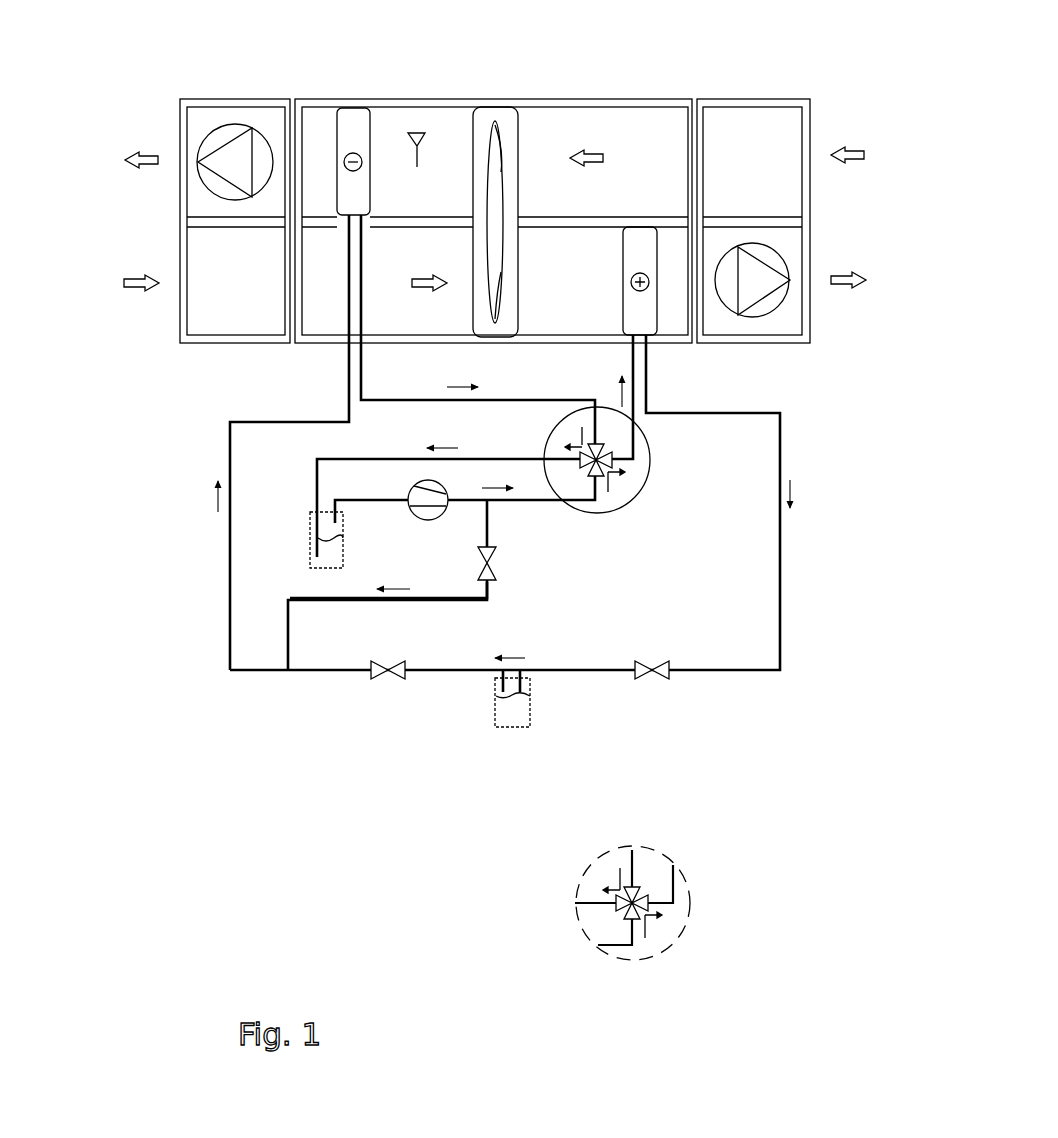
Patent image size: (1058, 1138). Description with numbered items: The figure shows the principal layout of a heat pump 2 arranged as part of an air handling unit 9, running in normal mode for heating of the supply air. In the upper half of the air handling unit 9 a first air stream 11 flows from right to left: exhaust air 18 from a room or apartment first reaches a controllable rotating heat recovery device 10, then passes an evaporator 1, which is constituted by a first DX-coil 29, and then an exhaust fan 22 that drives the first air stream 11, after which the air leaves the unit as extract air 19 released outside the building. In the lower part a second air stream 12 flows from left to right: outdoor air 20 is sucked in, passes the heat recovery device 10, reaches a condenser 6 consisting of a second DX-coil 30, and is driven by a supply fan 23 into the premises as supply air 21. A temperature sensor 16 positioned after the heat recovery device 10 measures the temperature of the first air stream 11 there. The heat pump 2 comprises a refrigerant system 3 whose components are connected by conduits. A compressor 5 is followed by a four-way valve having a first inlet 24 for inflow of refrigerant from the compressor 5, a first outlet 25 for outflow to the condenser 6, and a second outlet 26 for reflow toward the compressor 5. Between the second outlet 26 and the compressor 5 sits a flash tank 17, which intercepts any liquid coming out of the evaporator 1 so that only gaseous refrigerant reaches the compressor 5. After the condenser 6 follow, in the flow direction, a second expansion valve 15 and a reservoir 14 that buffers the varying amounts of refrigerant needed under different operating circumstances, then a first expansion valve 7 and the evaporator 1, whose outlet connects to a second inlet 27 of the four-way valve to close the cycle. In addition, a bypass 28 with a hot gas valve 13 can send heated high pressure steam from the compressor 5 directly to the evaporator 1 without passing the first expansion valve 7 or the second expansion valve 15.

The evaporator 1 is at (382, 125).
The heat pump 2 is at (212, 682).
The refrigerant system 3 is at (227, 440).
The compressor 5 is at (452, 507).
The condenser 6 is at (680, 305).
The first expansion valve 7 is at (368, 678).
The air handling unit 9 is at (818, 92).
The heat recovery device 10 is at (502, 115).
The first air stream 11 is at (607, 159).
The second air stream 12 is at (412, 286).
The hot gas valve 13 is at (495, 556).
The reservoir 14 is at (530, 710).
The second expansion valve 15 is at (660, 682).
The temperature sensor 16 is at (421, 129).
The flash tank 17 is at (312, 565).
The exhaust air 18 is at (869, 157).
The extract air 19 is at (121, 161).
The outdoor air 20 is at (122, 285).
The supply air 21 is at (869, 283).
The exhaust fan 22 is at (242, 123).
The supply fan 23 is at (780, 312).
The first inlet 24 is at (590, 942).
The first outlet 25 is at (676, 867).
The second outlet 26 is at (573, 906).
The second inlet 27 is at (626, 851).
The bypass 28 is at (493, 597).
The first DX-coil 29 is at (355, 115).
The second DX-coil 30 is at (645, 315).